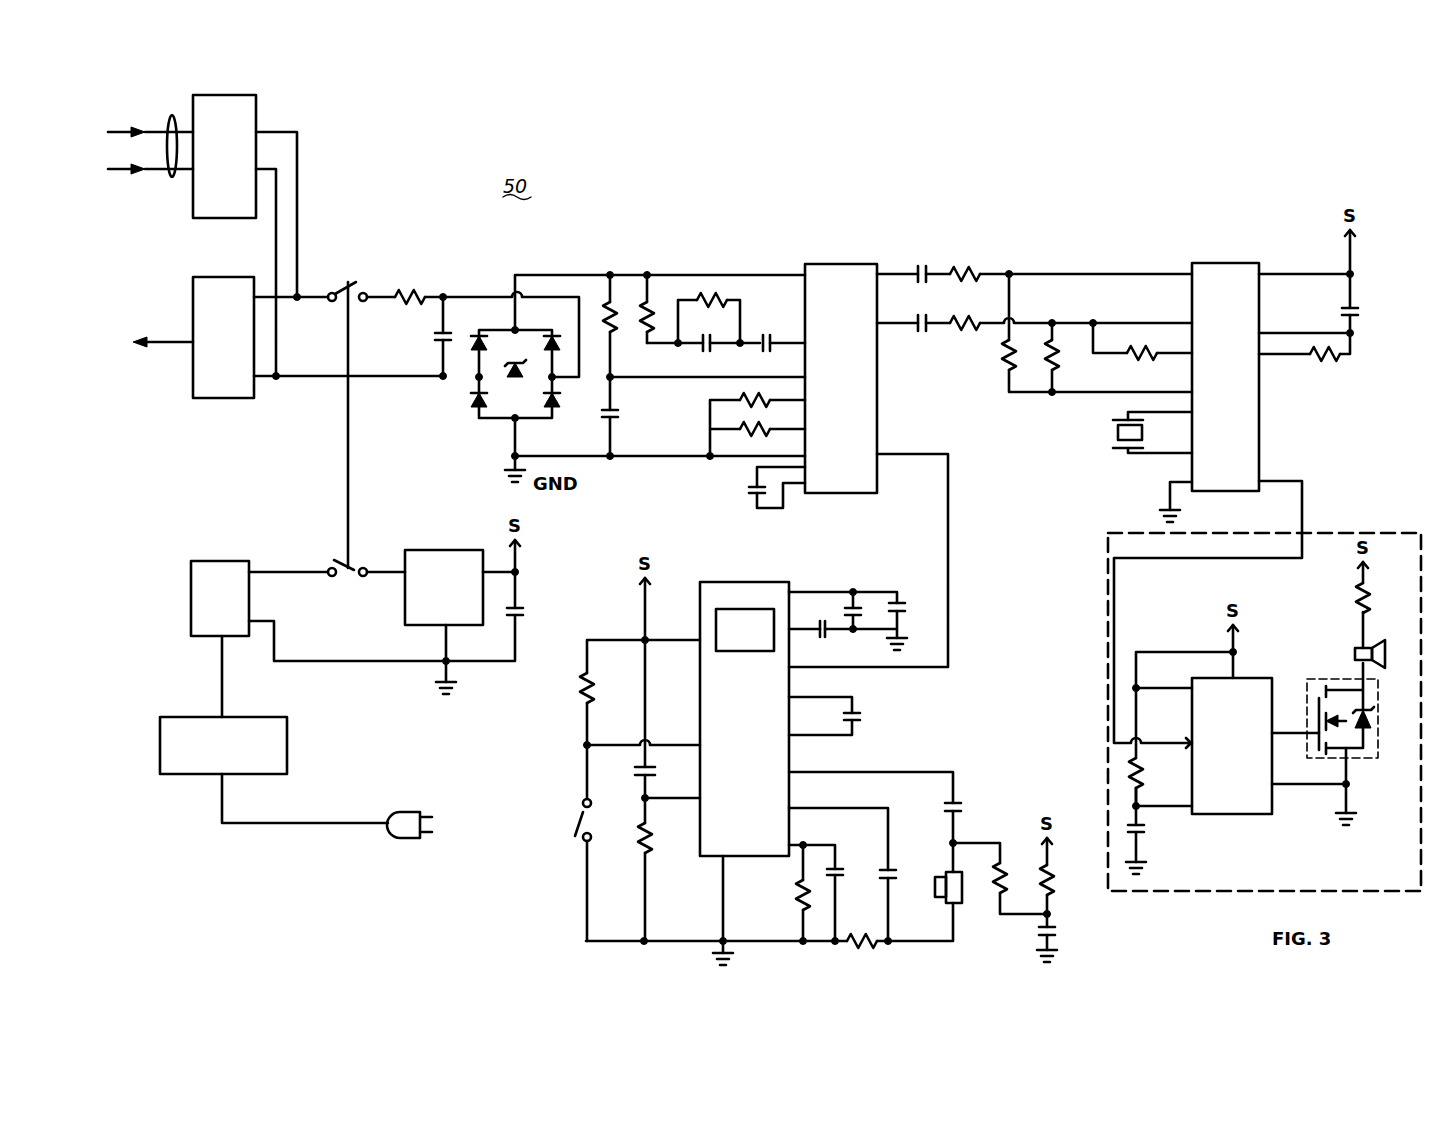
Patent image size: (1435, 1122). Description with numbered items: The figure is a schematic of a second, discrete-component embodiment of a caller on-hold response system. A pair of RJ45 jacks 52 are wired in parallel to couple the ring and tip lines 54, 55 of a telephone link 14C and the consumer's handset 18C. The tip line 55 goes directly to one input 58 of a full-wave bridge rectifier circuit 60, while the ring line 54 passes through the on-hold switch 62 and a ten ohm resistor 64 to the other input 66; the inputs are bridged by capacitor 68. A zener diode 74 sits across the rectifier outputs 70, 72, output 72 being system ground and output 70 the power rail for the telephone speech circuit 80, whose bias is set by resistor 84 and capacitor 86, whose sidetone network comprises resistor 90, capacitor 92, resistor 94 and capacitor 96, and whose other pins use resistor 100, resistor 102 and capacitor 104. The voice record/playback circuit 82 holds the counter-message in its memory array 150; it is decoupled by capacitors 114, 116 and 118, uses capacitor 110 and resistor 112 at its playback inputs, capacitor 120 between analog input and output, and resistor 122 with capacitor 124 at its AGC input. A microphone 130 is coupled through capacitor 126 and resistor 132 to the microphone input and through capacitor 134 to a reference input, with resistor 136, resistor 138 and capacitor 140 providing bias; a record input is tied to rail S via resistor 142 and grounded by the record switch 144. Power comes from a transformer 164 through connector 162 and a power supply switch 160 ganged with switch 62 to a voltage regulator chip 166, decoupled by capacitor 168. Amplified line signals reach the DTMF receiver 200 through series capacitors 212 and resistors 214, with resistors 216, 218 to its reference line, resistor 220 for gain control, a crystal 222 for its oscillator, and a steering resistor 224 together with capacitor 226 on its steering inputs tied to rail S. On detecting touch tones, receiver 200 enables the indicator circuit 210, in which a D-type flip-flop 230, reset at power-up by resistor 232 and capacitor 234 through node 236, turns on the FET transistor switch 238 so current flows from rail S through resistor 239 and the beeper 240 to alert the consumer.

The telephone link 14C is at (172, 117).
The handset 18C is at (173, 342).
The RJ45 jacks 52 is at (236, 162).
The ring line 54 is at (151, 137).
The tip line 55 is at (148, 173).
The input of rectifier 58 is at (463, 382).
The full-wave bridge rectifier circuit 60 is at (509, 375).
The on-hold switch 62 is at (337, 290).
The ten ohm resistor 64 is at (408, 292).
The input of rectifier 66 is at (554, 378).
The capacitor 68 is at (435, 334).
The output of rectifier 70 is at (512, 328).
The output of rectifier 72 is at (518, 406).
The zener diode 74 is at (518, 362).
The telephone speech circuit 80 is at (851, 361).
The voice record/playback circuit 82 is at (753, 744).
The resistor 84 is at (607, 299).
The capacitor 86 is at (618, 415).
The resistor 90 is at (713, 297).
The capacitor 92 is at (700, 363).
The resistor 94 is at (645, 340).
The capacitor 96 is at (762, 363).
The resistor 100 is at (738, 398).
The resistor 102 is at (777, 426).
The capacitor 104 is at (750, 487).
The capacitor 110 is at (635, 772).
The resistor 112 is at (646, 828).
The capacitor 114 is at (824, 636).
The capacitor 116 is at (848, 605).
The capacitor 118 is at (917, 603).
The capacitor 120 is at (858, 718).
The resistor 122 is at (800, 892).
The capacitor 124 is at (839, 866).
The capacitor 126 is at (888, 882).
The microphone 130 is at (938, 902).
The resistor 132 is at (870, 946).
The capacitor 134 is at (963, 807).
The resistor 136 is at (999, 902).
The resistor 138 is at (1050, 882).
The capacitor 140 is at (1058, 933).
The resistor 142 is at (582, 698).
The record switch 144 is at (577, 832).
The memory array 150 is at (754, 641).
The power supply switch 160 is at (350, 567).
The connector 162 is at (228, 609).
The power transformer 164 is at (195, 717).
The voltage regulator chip 166 is at (402, 604).
The capacitor 168 is at (525, 611).
The DTMF receiver 200 is at (1232, 382).
The indicator circuit 210 is at (1237, 712).
The capacitor 212 is at (922, 265).
The resistor 214 is at (969, 262).
The resistor 216 is at (1003, 374).
The resistor 218 is at (1057, 366).
The resistor 220 is at (1138, 351).
The crystal 222 is at (1112, 438).
The resistor 224 is at (1298, 364).
The capacitor 226 is at (1359, 312).
The D-type flip-flop 230 is at (1240, 756).
The resistor 232 is at (1127, 770).
The capacitor 234 is at (1146, 829).
The node 236 is at (1132, 806).
The FET transistor switch 238 is at (1361, 763).
The resistor 239 is at (1355, 602).
The beeper 240 is at (1356, 648).